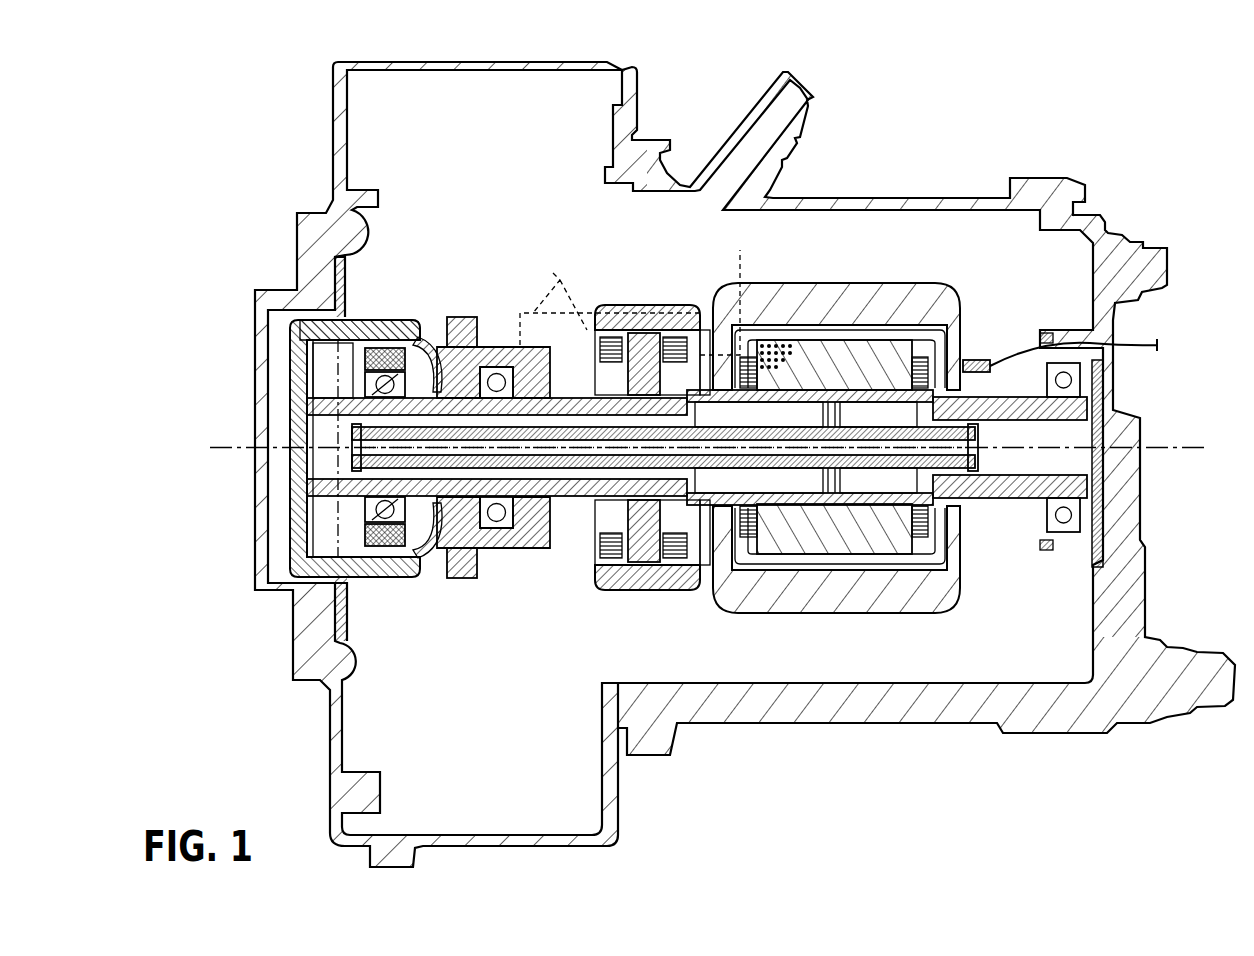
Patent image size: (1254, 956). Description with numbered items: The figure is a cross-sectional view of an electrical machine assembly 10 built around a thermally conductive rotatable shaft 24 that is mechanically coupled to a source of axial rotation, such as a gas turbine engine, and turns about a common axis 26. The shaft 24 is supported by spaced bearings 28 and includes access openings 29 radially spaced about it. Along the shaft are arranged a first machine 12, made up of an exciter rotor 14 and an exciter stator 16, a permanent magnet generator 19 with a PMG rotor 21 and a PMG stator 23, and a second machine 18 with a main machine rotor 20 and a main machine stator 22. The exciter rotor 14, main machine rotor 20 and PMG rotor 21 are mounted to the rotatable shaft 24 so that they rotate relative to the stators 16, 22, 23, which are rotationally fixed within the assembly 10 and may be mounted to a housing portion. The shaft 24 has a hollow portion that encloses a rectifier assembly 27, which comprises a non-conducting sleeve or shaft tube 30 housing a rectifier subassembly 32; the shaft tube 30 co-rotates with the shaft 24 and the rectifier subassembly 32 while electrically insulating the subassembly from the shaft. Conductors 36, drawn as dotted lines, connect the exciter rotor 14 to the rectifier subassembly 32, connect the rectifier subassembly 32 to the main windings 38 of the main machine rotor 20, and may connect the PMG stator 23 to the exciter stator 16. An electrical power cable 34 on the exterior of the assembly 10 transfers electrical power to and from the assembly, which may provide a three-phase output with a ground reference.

The electrical machine assembly 10 is at (922, 110).
The first machine 12 is at (697, 340).
The exciter rotor 14 is at (632, 400).
The exciter stator 16 is at (647, 335).
The second machine 18 is at (960, 514).
The permanent magnet generator 19 is at (432, 330).
The main machine rotor 20 is at (868, 345).
The PMG rotor 21 is at (393, 320).
The main machine stator 22 is at (888, 600).
The PMG stator 23 is at (370, 555).
The rotatable shaft 24 is at (343, 472).
The common axis 26 is at (723, 447).
The rectifier assembly 27 is at (375, 420).
The bearings 28 is at (480, 522).
The access openings 29 is at (610, 398).
The shaft tube 30 is at (349, 433).
The rectifier subassembly 32 is at (356, 437).
The electrical power cable 34 is at (977, 357).
The conductors 36 is at (636, 291).
The main windings 38 is at (770, 358).